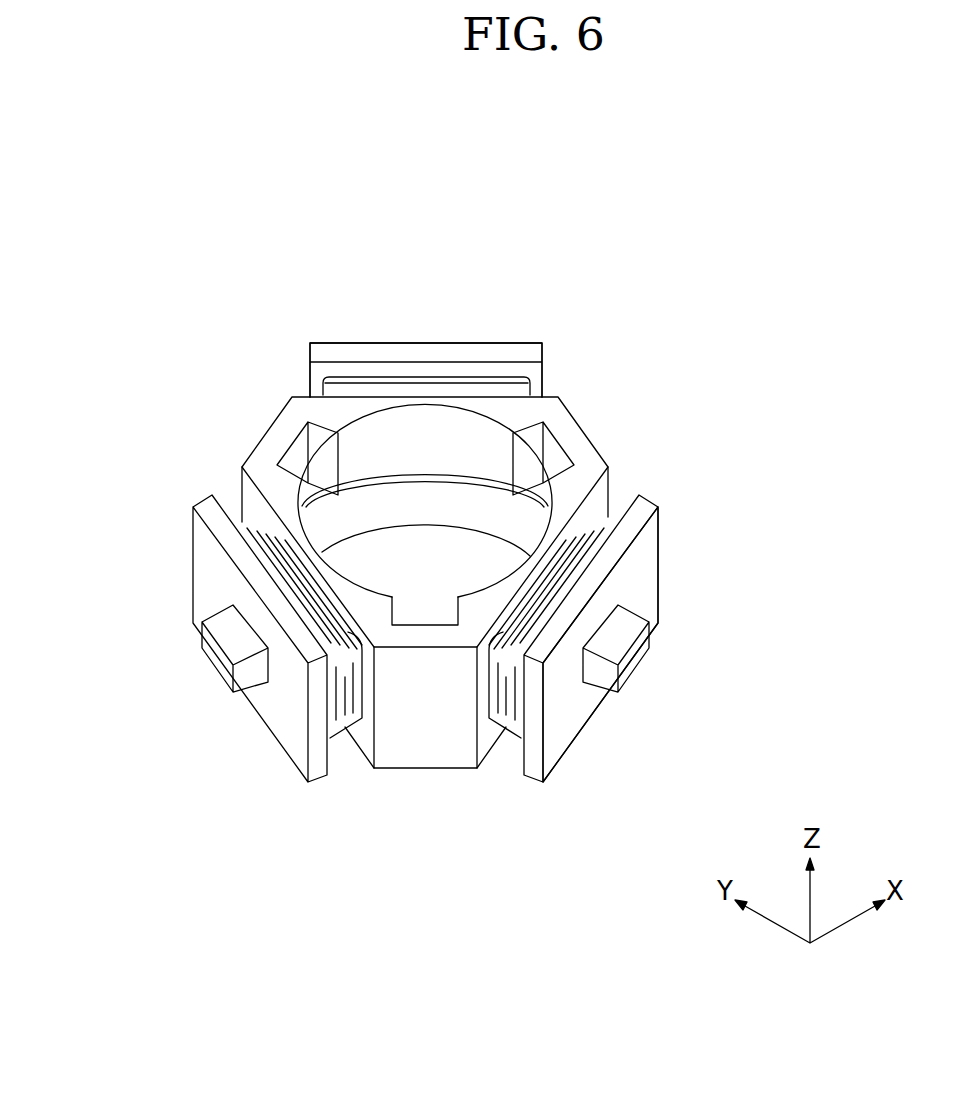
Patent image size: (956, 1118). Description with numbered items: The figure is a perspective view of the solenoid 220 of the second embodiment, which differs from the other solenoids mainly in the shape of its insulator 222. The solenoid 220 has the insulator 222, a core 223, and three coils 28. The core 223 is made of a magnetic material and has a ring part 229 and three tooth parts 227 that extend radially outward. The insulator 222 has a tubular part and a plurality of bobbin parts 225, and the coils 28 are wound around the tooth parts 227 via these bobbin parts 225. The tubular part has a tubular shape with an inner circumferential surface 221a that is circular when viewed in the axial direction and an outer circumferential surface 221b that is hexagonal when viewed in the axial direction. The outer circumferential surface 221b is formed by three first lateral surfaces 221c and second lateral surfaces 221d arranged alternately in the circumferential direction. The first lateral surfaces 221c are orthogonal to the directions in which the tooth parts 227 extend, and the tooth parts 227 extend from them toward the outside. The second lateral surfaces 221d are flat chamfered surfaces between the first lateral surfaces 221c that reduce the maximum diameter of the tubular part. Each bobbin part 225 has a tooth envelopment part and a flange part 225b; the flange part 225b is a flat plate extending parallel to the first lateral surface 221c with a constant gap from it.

The solenoid 220 is at (660, 252).
The inner circumferential surface 221a is at (490, 447).
The outer circumferential surface 221b is at (596, 490).
The first lateral surface 221c is at (604, 502).
The second lateral surface 221d is at (590, 430).
The insulator 222 is at (523, 331).
The core 223 is at (449, 452).
The bobbin part 225 is at (322, 331).
The flange part 225b is at (643, 555).
The tooth part 227 is at (618, 642).
The ring part 229 is at (418, 495).
The coil 28 is at (372, 388).